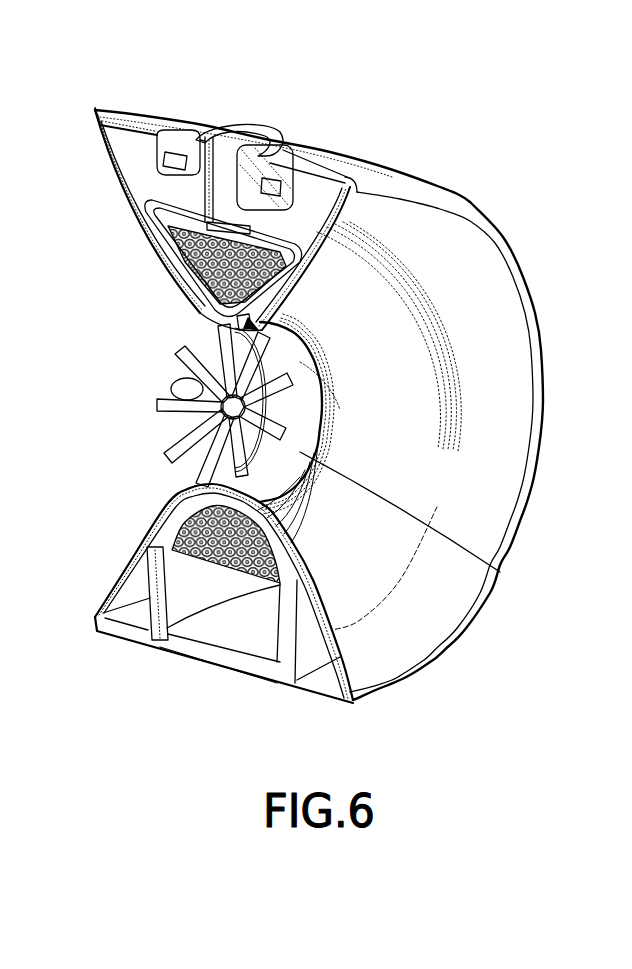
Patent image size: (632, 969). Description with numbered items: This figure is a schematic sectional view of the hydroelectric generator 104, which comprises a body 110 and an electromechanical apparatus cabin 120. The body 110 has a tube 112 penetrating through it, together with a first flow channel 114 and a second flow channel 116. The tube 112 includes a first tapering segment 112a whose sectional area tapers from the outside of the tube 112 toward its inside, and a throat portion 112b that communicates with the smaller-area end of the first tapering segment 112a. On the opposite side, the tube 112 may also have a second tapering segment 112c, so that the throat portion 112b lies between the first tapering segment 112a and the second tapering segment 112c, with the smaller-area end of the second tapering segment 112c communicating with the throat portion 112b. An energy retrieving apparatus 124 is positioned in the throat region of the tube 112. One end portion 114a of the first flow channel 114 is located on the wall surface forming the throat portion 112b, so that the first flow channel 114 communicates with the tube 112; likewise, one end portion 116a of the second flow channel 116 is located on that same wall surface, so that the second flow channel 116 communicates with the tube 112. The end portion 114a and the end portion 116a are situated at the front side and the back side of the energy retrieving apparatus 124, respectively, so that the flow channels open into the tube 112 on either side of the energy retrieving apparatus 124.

The hydroelectric generator 104 is at (423, 157).
The body 110 is at (497, 242).
The tube 112 is at (102, 358).
The first tapering segment 112a is at (126, 400).
The throat portion 112b is at (283, 449).
The second tapering segment 112c is at (473, 396).
The first flow channel 114 is at (177, 187).
The end portion of the first flow channel 114a is at (199, 311).
The second flow channel 116 is at (283, 215).
The end portion of the second flow channel 116a is at (262, 368).
The electromechanical apparatus cabin 120 is at (262, 576).
The energy retrieving apparatus 124 is at (167, 448).